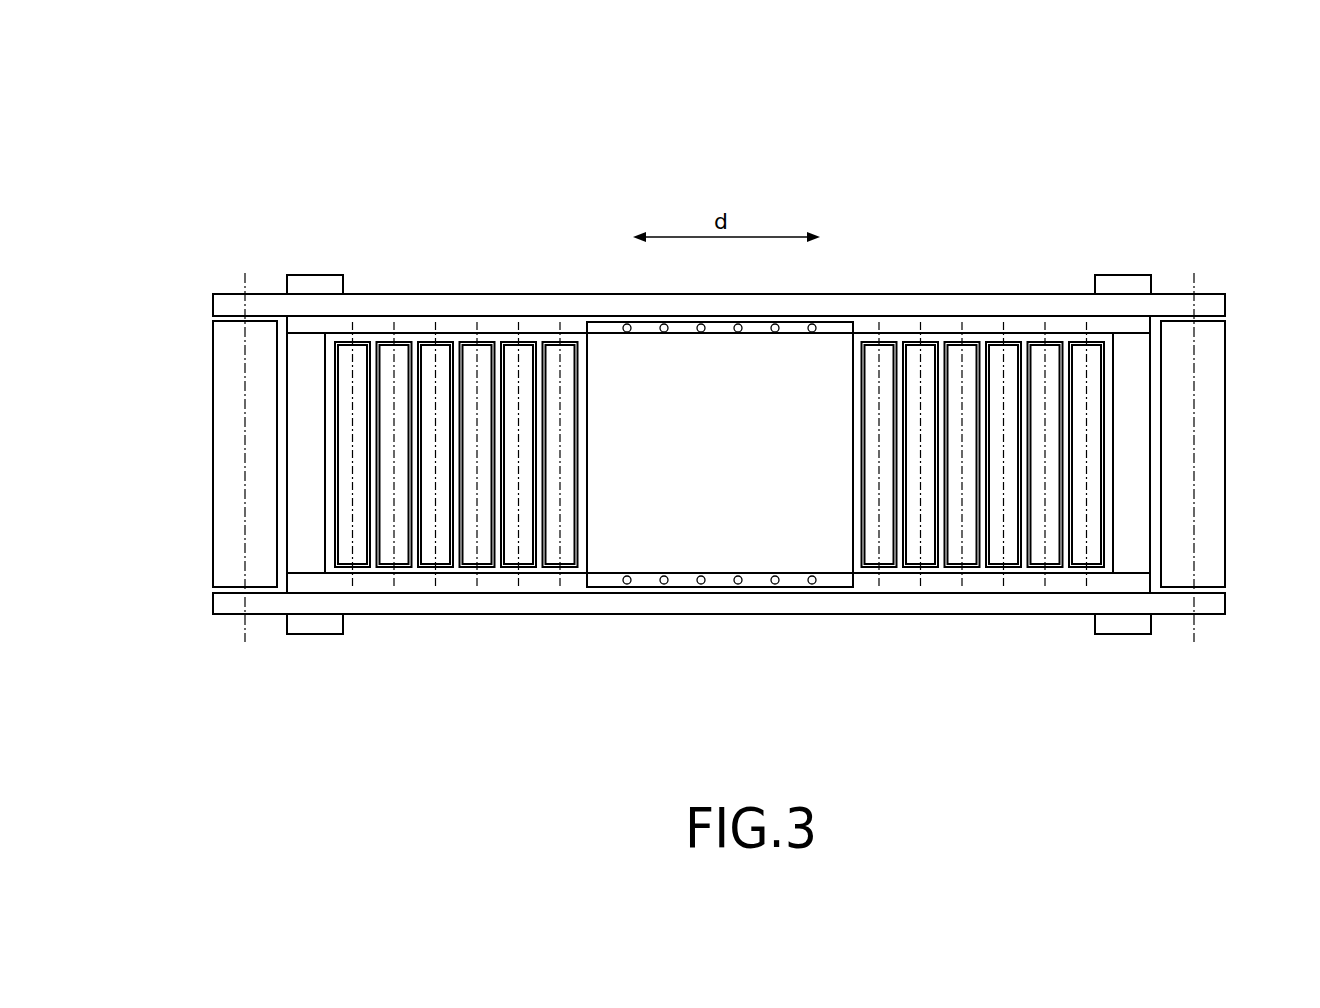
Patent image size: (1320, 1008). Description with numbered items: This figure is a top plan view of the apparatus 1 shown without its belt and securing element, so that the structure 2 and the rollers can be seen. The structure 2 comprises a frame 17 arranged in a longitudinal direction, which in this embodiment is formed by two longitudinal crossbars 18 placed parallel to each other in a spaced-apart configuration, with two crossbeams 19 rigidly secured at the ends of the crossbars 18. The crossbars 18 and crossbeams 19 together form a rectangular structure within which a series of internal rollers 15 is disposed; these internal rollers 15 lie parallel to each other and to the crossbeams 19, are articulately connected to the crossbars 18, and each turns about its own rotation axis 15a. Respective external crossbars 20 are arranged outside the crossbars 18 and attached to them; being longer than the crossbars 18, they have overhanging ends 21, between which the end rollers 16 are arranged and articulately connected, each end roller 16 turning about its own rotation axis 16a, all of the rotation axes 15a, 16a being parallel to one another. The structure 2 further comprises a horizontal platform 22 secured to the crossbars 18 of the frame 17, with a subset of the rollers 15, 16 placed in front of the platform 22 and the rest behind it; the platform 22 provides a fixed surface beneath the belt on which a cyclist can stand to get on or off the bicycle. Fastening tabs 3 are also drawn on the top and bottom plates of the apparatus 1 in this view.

The apparatus 1 is at (661, 109).
The structure 2 is at (940, 288).
The fastening tabs 3 is at (315, 277).
The internal rollers 15 is at (385, 537).
The rotation axis 15a is at (393, 581).
The end rollers 16 is at (212, 373).
The rotation axis 16a is at (243, 443).
The frame 17 is at (489, 288).
The longitudinal crossbars 18 is at (417, 328).
The crossbeams 19 is at (307, 542).
The external crossbars 20 is at (600, 322).
The overhanging ends 21 is at (230, 305).
The horizontal platform 22 is at (718, 548).